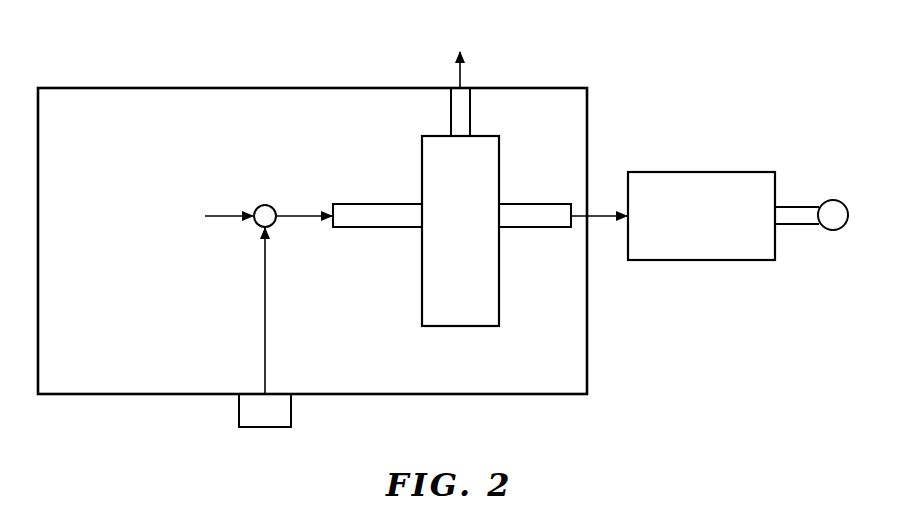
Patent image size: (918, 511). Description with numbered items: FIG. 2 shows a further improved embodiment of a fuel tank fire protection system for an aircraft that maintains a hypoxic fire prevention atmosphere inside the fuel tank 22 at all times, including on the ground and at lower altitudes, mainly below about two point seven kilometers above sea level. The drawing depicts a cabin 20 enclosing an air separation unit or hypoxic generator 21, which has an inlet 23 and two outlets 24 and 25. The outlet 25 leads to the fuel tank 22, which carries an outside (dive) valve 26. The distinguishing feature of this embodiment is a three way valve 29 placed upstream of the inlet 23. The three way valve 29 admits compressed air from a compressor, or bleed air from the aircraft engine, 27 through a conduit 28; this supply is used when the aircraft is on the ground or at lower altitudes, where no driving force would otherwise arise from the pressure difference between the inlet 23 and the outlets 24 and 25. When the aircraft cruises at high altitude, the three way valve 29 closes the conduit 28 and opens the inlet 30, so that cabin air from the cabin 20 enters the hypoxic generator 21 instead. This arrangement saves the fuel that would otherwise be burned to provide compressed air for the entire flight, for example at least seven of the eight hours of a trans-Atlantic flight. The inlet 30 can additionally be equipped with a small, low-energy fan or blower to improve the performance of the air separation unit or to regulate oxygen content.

The cabin 20 is at (207, 88).
The air separation unit or hypoxic generator 21 is at (455, 330).
The fuel tank 22 is at (703, 172).
The inlet 23 is at (381, 227).
The outlet 24 is at (451, 112).
The outlet 25 is at (540, 227).
The outside (dive) valve 26 is at (833, 200).
The compressor (or bleed air from the aircraft engine) 27 is at (263, 427).
The conduit 28 is at (265, 316).
The three way valve 29 is at (266, 205).
The inlet 30 is at (218, 220).